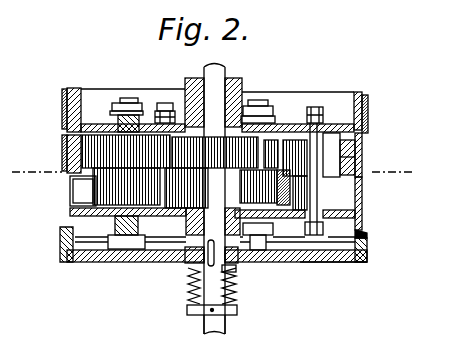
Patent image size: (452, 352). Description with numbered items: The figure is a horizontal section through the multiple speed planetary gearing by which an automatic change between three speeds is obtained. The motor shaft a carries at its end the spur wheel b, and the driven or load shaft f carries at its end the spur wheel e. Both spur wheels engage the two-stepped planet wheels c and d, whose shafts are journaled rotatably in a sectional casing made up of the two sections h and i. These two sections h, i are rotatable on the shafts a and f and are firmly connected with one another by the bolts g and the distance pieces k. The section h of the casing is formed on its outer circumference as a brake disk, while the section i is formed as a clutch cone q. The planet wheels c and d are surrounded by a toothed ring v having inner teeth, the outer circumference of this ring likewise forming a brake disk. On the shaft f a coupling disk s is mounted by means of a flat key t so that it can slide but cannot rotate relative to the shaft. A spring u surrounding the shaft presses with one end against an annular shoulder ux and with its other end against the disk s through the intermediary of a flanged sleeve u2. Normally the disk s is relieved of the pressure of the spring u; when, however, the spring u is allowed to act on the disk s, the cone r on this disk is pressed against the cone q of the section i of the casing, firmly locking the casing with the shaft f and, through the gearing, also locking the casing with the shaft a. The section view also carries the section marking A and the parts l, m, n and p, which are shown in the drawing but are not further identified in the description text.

The motor shaft a is at (226, 80).
The cover l is at (241, 97).
The ring m is at (61, 100).
The ring n is at (62, 148).
The casing section h is at (366, 101).
The planet wheel c is at (100, 150).
The spur wheel b is at (245, 150).
The bolt g is at (316, 155).
The toothed ring v is at (330, 168).
The distance piece k is at (325, 175).
The section line A is at (217, 163).
The planet wheel d is at (103, 188).
The spur wheel e is at (180, 206).
The casing section i is at (364, 209).
The clutch cone q is at (365, 233).
The cone r is at (362, 256).
The coupling disk s is at (334, 262).
The hub p is at (189, 241).
The flat key t is at (188, 283).
The driven or load shaft f is at (238, 279).
The flanged sleeve u2 is at (238, 271).
The spring u is at (243, 299).
The annular shoulder ux is at (236, 309).